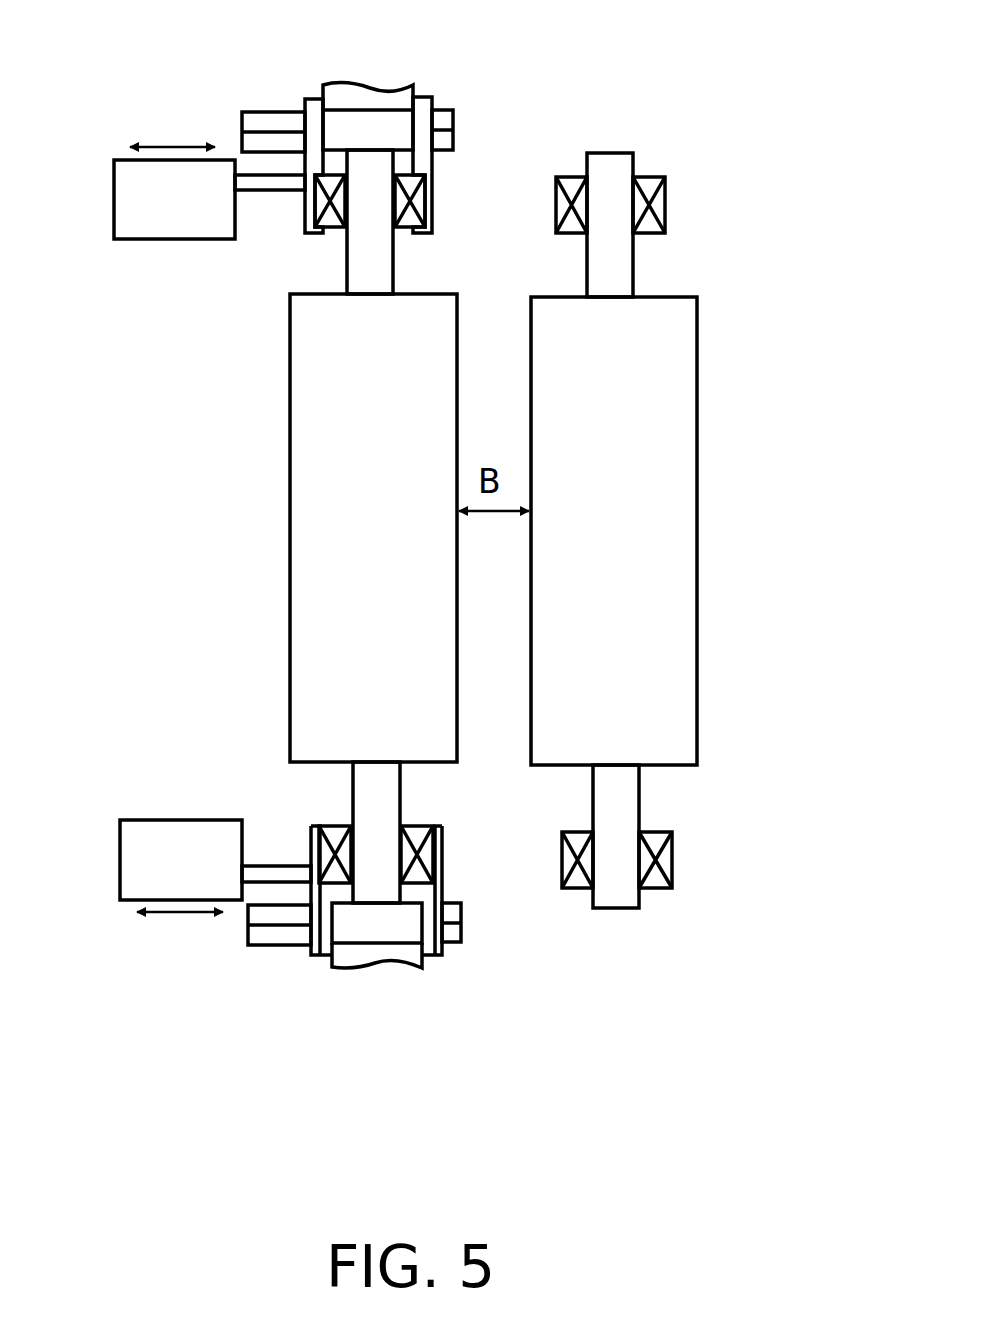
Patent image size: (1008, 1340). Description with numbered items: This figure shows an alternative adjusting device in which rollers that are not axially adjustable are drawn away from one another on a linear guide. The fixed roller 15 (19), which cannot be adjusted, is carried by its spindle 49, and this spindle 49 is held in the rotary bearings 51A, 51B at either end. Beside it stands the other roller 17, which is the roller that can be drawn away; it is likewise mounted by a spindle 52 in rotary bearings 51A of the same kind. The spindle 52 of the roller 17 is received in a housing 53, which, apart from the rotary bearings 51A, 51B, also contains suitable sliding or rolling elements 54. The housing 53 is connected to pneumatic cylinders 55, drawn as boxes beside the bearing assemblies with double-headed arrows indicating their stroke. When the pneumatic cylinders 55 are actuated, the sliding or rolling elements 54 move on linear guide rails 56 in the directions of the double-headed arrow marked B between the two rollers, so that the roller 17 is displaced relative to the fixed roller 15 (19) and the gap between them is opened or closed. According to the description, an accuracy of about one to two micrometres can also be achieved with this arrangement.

The roller 15 is at (695, 531).
The roller 19 is at (660, 713).
The roller 17 is at (310, 702).
The spindle 49 is at (615, 892).
The rotary bearing 51A is at (415, 830).
The rotary bearing 51B is at (408, 223).
The spindle 52 is at (365, 792).
The housing 53 is at (430, 945).
The sliding or rolling elements 54 is at (355, 928).
The pneumatic cylinder 55 is at (138, 227).
The linear guide rail 56 is at (445, 120).